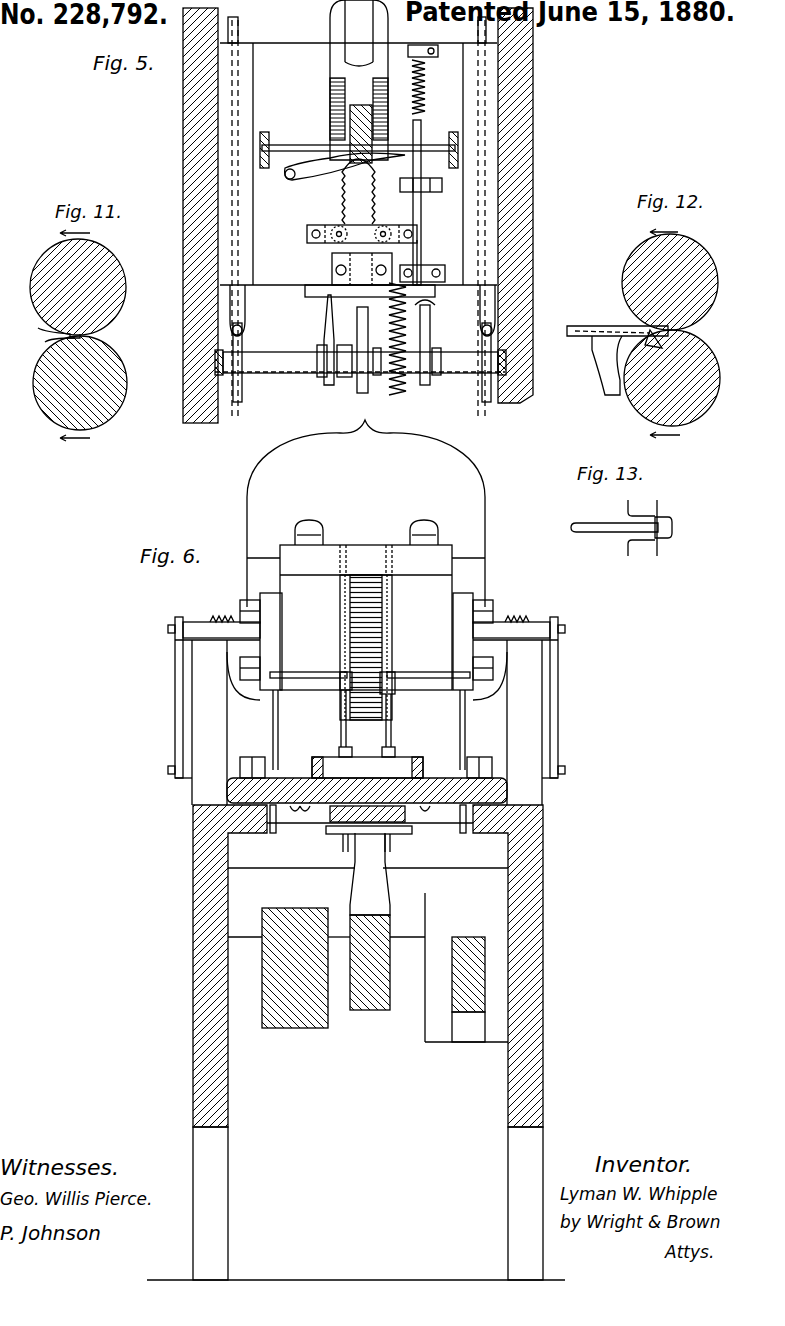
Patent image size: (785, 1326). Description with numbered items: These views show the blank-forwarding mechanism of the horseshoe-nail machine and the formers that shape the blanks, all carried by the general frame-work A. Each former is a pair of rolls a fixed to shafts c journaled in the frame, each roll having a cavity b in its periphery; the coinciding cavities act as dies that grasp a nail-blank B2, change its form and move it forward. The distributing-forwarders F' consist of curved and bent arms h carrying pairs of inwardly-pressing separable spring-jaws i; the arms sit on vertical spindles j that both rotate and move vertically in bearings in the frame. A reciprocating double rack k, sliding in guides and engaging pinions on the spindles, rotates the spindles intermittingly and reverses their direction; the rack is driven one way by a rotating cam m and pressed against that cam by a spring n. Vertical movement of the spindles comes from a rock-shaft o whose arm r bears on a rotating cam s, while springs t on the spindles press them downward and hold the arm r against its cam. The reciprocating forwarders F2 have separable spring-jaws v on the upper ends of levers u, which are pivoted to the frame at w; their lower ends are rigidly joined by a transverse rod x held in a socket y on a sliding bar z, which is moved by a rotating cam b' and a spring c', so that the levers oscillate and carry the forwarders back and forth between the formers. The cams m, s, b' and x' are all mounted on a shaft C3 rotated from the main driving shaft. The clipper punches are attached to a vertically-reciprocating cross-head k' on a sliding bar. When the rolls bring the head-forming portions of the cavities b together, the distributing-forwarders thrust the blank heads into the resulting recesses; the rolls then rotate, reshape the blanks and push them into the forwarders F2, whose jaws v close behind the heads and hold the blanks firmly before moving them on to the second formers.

In FIG. 5, the frame A is at (365, 215).
In FIG. 6, the frame A is at (356, 1042).
In FIG. 5, the roll a is at (421, 162).
In FIG. 11, the roll a is at (78, 335).
In FIG. 12, the roll a is at (671, 333).
In FIG. 11, the cavity b is at (56, 334).
In FIG. 12, the cavity b is at (653, 345).
In FIG. 5, the rotating cam b' is at (433, 342).
In FIG. 6, the shaft c is at (366, 620).
In FIG. 5, the spring c' is at (428, 87).
In FIG. 5, the cam shaft C3 is at (360, 361).
In FIG. 6, the curved and bent arm h is at (370, 674).
In FIG. 6, the separable spring-jaw i is at (366, 640).
In FIG. 5, the vertical spindle j is at (362, 225).
In FIG. 6, the vertical spindle j is at (367, 723).
In FIG. 5, the reciprocating double rack k is at (359, 112).
In FIG. 6, the cross-head k' is at (366, 513).
In FIG. 5, the rotating cam m is at (363, 350).
In FIG. 5, the spring n is at (345, 166).
In FIG. 5, the rock-shaft o is at (370, 276).
In FIG. 5, the arm r is at (324, 340).
In FIG. 5, the rotating cam s is at (322, 358).
In FIG. 6, the spring t is at (366, 641).
In FIG. 5, the lever u is at (355, 147).
In FIG. 6, the lever u is at (369, 730).
In FIG. 13, the separable spring-jaw v is at (641, 528).
In FIG. 6, the pivot w is at (366, 759).
In FIG. 5, the bracket w' is at (362, 310).
In FIG. 5, the transverse rod x is at (358, 141).
In FIG. 6, the transverse rod x is at (370, 828).
In FIG. 5, the cam x' is at (362, 362).
In FIG. 5, the socket y is at (424, 202).
In FIG. 5, the sliding bar z is at (381, 202).
In FIG. 12, the blank B2 is at (617, 322).
In FIG. 13, the blank B2 is at (614, 520).
In FIG. 12, the reciprocating forwarder F2 is at (605, 360).
In FIG. 13, the reciprocating forwarder F2 is at (660, 514).
In FIG. 6, the distributing-forwarder F' is at (366, 710).